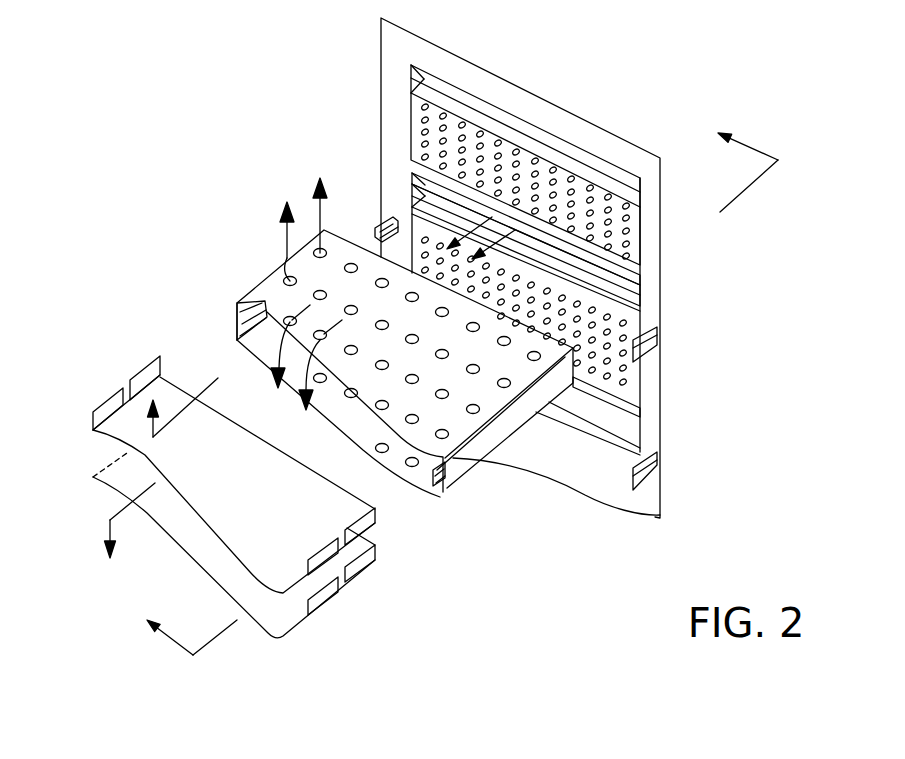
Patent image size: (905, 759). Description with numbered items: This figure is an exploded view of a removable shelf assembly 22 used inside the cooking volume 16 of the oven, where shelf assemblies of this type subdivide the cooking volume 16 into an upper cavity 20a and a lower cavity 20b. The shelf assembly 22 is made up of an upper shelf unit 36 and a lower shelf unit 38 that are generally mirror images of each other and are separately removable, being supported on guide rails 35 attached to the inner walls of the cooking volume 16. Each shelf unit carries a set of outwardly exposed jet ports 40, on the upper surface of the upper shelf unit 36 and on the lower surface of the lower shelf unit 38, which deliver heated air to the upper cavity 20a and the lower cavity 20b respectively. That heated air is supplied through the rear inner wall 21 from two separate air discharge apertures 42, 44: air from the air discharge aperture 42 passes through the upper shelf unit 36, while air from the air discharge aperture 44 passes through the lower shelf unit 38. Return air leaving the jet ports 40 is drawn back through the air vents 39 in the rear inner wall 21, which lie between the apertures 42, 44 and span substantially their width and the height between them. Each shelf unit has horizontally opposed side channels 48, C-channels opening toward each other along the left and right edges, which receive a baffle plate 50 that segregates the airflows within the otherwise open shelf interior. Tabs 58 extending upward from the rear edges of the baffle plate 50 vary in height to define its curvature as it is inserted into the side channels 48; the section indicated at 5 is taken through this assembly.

The cooking volume 16 is at (113, 133).
The upper cavity 20a is at (291, 102).
The lower cavity 20b is at (556, 541).
The rear inner wall 21 is at (643, 150).
The shelf assembly 22 is at (248, 201).
The guide rails 35 is at (658, 336).
The upper shelf unit 36 is at (556, 376).
The lower shelf unit 38 is at (550, 401).
The air vents 39 is at (422, 131).
The jet ports 40 is at (320, 254).
The air discharge aperture 42 is at (631, 282).
The air discharge aperture 44 is at (632, 307).
The side channels 48 is at (236, 337).
The baffle plate 50 is at (278, 573).
The tabs 58 is at (220, 503).
The section line 5 is at (452, 386).